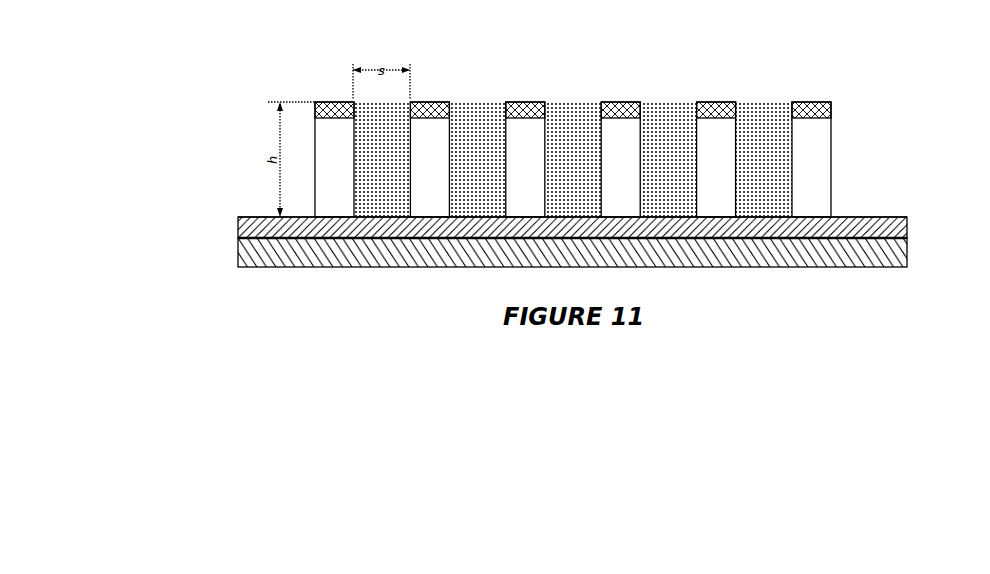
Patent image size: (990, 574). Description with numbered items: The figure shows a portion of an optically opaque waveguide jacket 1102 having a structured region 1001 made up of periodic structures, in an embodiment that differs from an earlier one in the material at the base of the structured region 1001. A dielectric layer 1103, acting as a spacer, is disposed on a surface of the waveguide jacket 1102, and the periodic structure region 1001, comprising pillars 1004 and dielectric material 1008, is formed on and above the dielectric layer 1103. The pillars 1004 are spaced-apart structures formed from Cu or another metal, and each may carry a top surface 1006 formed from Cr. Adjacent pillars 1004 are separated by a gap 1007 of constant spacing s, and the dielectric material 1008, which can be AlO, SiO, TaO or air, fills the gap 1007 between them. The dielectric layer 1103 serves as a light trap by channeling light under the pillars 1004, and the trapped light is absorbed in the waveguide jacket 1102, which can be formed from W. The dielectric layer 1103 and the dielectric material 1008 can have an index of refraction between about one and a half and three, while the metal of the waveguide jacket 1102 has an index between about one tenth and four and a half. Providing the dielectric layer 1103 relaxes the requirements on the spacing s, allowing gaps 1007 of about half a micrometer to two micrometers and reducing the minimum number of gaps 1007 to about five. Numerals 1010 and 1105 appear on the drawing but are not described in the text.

The structured region 1001 is at (464, 246).
The pillars 1004 is at (507, 120).
The top surface 1006 is at (428, 103).
The gap 1007 is at (528, 175).
The dielectric material 1008 is at (570, 117).
The cap layer 1010 is at (528, 102).
The waveguide jacket 1102 is at (901, 259).
The dielectric layer 1103 is at (906, 230).
The top surface of substrate 1105 is at (850, 217).